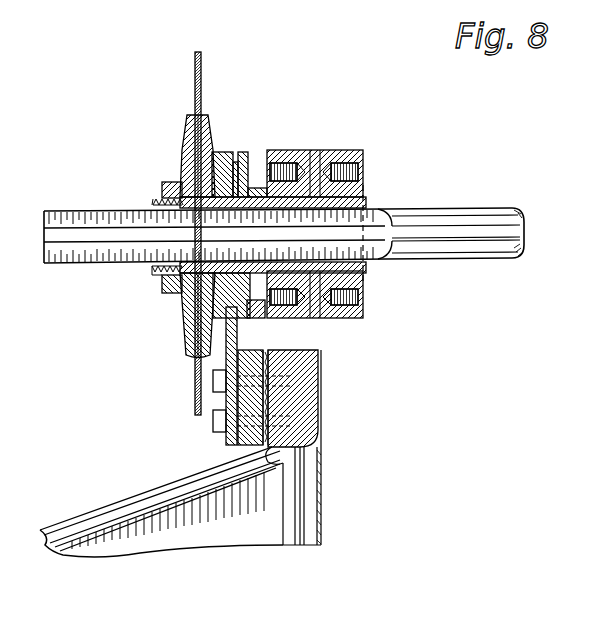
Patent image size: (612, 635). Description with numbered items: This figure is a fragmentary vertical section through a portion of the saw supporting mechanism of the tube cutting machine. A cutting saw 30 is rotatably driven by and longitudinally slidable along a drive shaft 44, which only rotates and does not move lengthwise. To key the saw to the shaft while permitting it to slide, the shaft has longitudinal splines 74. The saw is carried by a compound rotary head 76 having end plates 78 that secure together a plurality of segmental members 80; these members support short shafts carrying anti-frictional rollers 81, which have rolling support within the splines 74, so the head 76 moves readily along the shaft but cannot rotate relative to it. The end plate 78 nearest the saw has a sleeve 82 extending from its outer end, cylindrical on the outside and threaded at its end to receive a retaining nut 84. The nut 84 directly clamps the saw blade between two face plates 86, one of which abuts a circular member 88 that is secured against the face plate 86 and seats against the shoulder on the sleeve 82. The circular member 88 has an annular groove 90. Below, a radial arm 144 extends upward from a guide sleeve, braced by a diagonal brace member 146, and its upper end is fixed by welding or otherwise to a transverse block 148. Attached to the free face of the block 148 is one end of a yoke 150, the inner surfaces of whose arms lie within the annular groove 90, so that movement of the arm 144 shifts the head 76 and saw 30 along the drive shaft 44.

The cutting saw 30 is at (193, 78).
The drive shaft 44 is at (476, 208).
The longitudinal spline 74 is at (100, 210).
The rotary head 76 is at (349, 199).
The end plate 78 is at (275, 150).
The segmental member 80 is at (298, 150).
The anti-frictional roller 81 is at (370, 208).
The sleeve 82 is at (155, 204).
The retaining nut 84 is at (162, 288).
The face plate 86 is at (185, 118).
The circular member 88 is at (256, 311).
The annular groove 90 is at (237, 150).
The radial arm 144 is at (323, 492).
The diagonal brace member 146 is at (118, 505).
The transverse block 148 is at (238, 398).
The yoke 150 is at (225, 359).